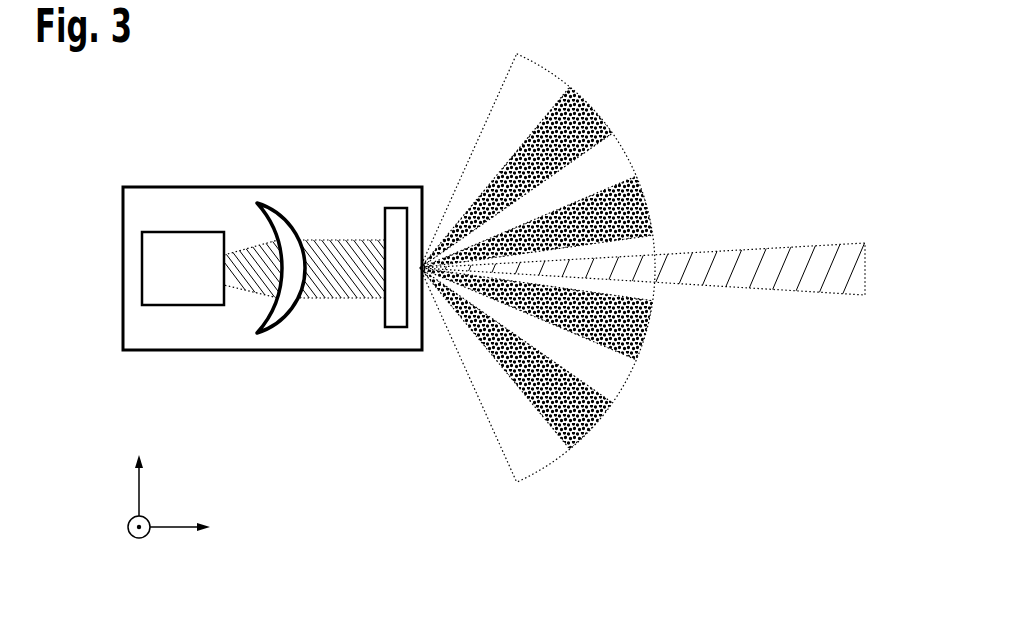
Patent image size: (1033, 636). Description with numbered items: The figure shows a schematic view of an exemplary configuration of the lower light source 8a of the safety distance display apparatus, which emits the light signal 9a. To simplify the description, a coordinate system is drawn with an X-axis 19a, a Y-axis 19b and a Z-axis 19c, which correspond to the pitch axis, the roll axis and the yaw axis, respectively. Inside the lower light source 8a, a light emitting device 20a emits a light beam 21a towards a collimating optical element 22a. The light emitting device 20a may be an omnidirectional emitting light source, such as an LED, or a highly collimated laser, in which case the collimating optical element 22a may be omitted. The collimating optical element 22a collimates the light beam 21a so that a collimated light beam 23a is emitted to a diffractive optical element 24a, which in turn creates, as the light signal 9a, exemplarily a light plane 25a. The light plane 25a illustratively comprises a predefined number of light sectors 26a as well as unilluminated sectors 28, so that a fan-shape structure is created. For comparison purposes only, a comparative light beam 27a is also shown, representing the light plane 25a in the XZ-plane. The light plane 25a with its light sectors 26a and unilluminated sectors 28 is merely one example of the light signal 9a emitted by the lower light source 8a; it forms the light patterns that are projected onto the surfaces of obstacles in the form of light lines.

The lower light source 8a is at (170, 187).
The light signal 9a is at (470, 122).
The X-axis 19a is at (178, 530).
The Y-axis 19b is at (137, 481).
The Z-axis 19c is at (130, 533).
The light emitting device 20a is at (142, 265).
The light beam 21a is at (242, 248).
The collimating optical element 22a is at (275, 332).
The collimated light beam 23a is at (344, 240).
The diffractive optical element 24a is at (395, 327).
The light plane 25a is at (478, 412).
The light sectors 26a is at (580, 120).
The comparative light beam 27a is at (792, 277).
The unilluminated sectors 28 is at (535, 78).